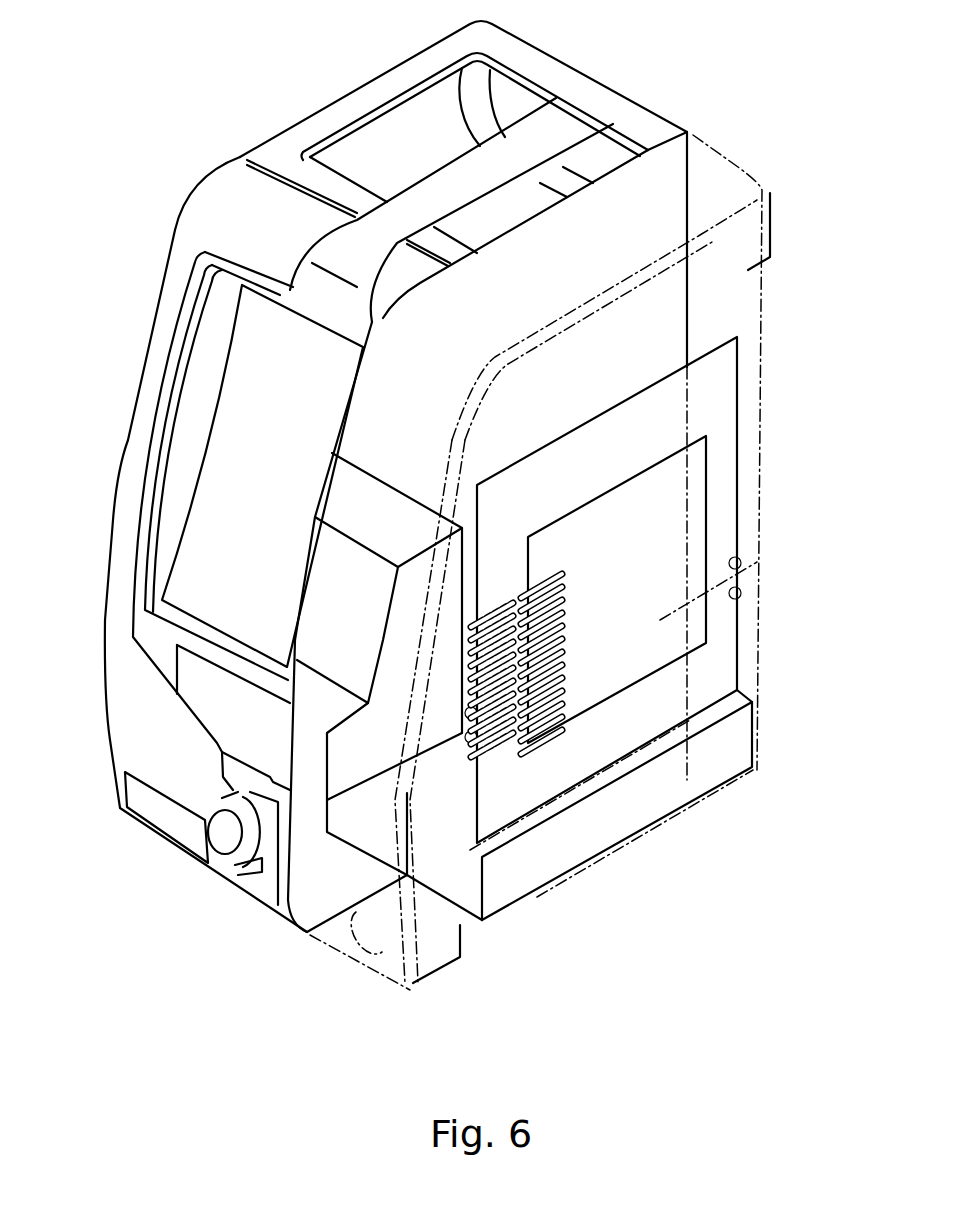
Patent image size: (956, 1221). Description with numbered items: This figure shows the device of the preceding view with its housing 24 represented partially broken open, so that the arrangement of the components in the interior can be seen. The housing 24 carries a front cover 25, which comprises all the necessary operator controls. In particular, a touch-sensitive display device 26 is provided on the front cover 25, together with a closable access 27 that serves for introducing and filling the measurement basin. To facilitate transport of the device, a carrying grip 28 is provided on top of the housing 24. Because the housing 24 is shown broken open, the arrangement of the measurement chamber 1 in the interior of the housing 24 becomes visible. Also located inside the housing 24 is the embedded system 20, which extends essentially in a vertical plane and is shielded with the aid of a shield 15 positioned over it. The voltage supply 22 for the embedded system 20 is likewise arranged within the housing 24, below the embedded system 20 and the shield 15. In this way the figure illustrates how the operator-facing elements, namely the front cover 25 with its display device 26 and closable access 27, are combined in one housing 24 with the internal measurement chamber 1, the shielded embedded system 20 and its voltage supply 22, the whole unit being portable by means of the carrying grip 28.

The measurement chamber 1 is at (345, 755).
The shield 15 is at (717, 398).
The embedded system 20 is at (642, 548).
The voltage supply 22 is at (647, 795).
The housing 24 is at (342, 935).
The front cover 25 is at (173, 750).
The touch-sensitive display device 26 is at (258, 447).
The closable access 27 is at (207, 697).
The carrying grip 28 is at (585, 112).